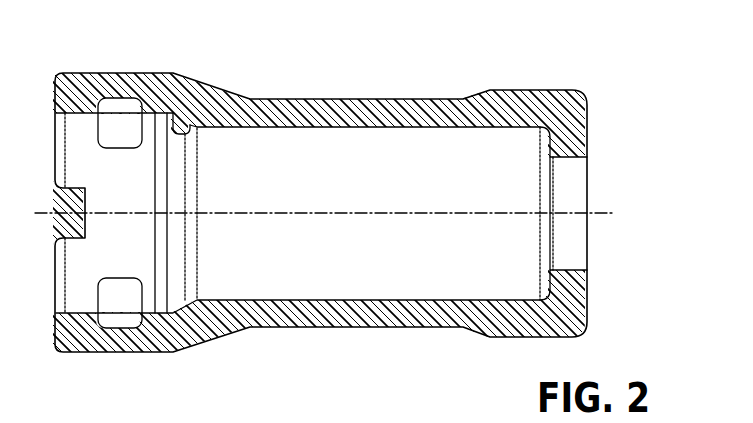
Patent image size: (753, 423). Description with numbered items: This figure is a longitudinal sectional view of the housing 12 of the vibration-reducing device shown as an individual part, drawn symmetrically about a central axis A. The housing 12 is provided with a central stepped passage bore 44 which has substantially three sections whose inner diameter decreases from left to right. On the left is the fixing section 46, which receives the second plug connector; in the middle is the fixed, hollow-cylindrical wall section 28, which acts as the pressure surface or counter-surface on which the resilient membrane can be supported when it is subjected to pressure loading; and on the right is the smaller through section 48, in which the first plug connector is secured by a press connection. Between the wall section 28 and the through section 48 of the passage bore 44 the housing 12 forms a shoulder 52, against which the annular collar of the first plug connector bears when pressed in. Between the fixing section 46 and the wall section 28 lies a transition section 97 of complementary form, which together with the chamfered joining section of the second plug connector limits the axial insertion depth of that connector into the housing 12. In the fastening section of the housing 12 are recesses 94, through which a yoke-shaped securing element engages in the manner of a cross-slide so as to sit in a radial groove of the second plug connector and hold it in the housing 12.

The housing 12 is at (560, 53).
The fixed wall section 28 is at (290, 127).
The central stepped passage bore 44 is at (285, 265).
The fixing section 46 is at (80, 312).
The through section 48 is at (573, 271).
The shoulder 52 is at (539, 134).
The recesses 94 is at (118, 288).
The transition section 97 is at (189, 128).
The central axis A is at (575, 215).